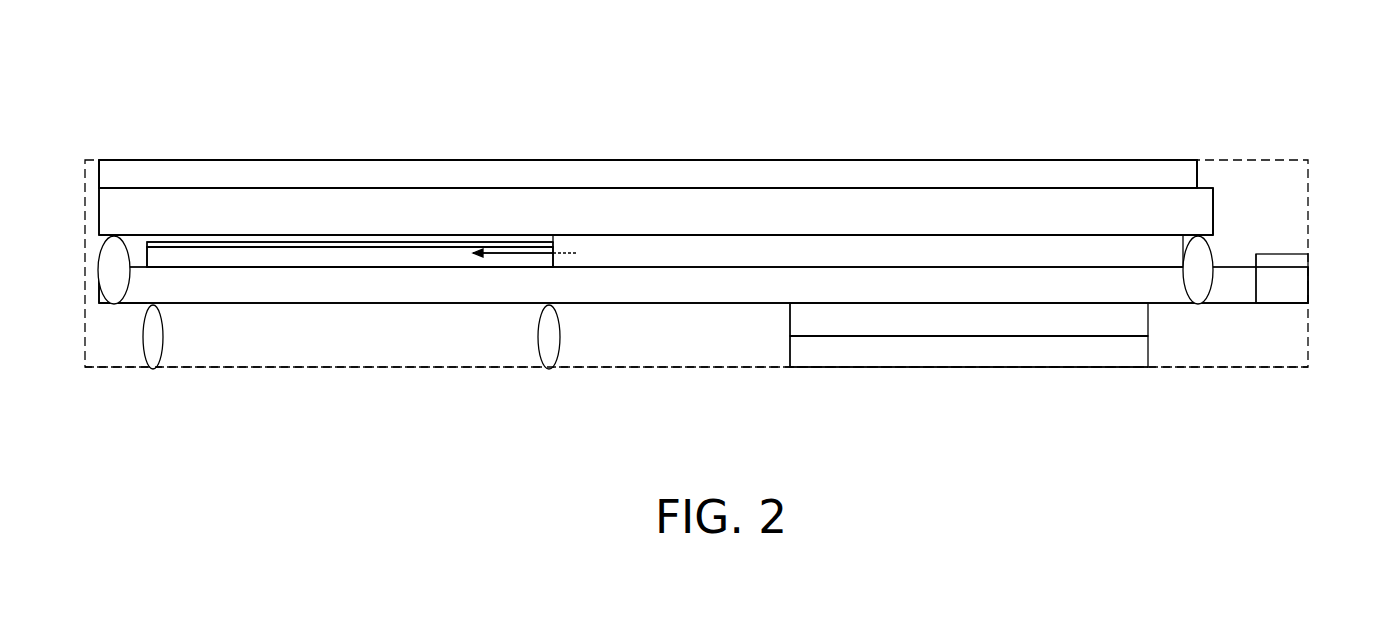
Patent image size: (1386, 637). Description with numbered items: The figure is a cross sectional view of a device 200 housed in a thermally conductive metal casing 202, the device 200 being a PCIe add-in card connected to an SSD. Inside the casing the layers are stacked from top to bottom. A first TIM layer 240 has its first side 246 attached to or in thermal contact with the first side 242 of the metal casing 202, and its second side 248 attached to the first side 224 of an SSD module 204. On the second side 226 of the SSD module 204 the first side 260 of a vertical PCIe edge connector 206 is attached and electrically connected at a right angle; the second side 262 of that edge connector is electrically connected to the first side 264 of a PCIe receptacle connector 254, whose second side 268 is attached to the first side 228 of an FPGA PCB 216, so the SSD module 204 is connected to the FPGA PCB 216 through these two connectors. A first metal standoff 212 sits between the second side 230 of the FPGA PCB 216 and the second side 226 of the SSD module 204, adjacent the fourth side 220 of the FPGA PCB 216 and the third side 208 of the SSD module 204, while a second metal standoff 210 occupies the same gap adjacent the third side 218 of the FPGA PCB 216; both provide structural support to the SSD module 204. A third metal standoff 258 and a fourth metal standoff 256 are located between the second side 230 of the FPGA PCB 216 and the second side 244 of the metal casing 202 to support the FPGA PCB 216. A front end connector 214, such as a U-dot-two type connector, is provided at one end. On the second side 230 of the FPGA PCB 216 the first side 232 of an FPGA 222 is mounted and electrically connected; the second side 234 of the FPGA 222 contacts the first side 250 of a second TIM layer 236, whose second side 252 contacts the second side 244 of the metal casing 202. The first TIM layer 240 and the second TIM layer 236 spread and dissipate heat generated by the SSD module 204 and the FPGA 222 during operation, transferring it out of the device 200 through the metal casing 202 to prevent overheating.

The device 200 is at (815, 45).
The metal casing 202 is at (667, 159).
The SSD module 204 is at (1153, 218).
The vertical (90°) PCIe edge connector 206 is at (343, 239).
The third side of the SSD module 208 is at (1213, 197).
The second metal support or standoff 210 is at (108, 267).
The first metal support or standoff 212 is at (1202, 255).
The front end connector 214 is at (1298, 278).
The FPGA PCB 216 is at (472, 283).
The third side of the FPGA PCB 218 is at (100, 296).
The fourth side of the FPGA PCB 220 is at (1257, 282).
The FPGA 222 is at (877, 323).
The first side of the SSD module 224 is at (513, 190).
The second side of the SSD module 226 is at (1040, 234).
The first side of the FPGA PCB 228 is at (382, 273).
The second side of the FPGA PCB 230 is at (273, 304).
The first side of the FPGA 232 is at (817, 304).
The second side of the FPGA 234 is at (1033, 338).
The second TIM layer 236 is at (933, 353).
The first TIM layer 240 is at (730, 177).
The first side of the metal casing 242 is at (778, 159).
The second side of the metal casing 244 is at (658, 368).
The first side of the first TIM layer 246 is at (938, 160).
The second side of the first TIM layer 248 is at (900, 187).
The first side of the second TIM layer 250 is at (1118, 336).
The second side of the second TIM layer 252 is at (1088, 368).
The PCIe receptacle connector 254 is at (452, 253).
The fourth metal standoff 256 is at (552, 348).
The third metal standoff 258 is at (155, 347).
The first side of the vertical PCIe edge connector 260 is at (420, 235).
The second side of the vertical PCIe edge connector 262 is at (403, 245).
The first side of the PCIe receptacle connector 264 is at (205, 245).
The second side of the PCIe receptacle connector 268 is at (237, 256).